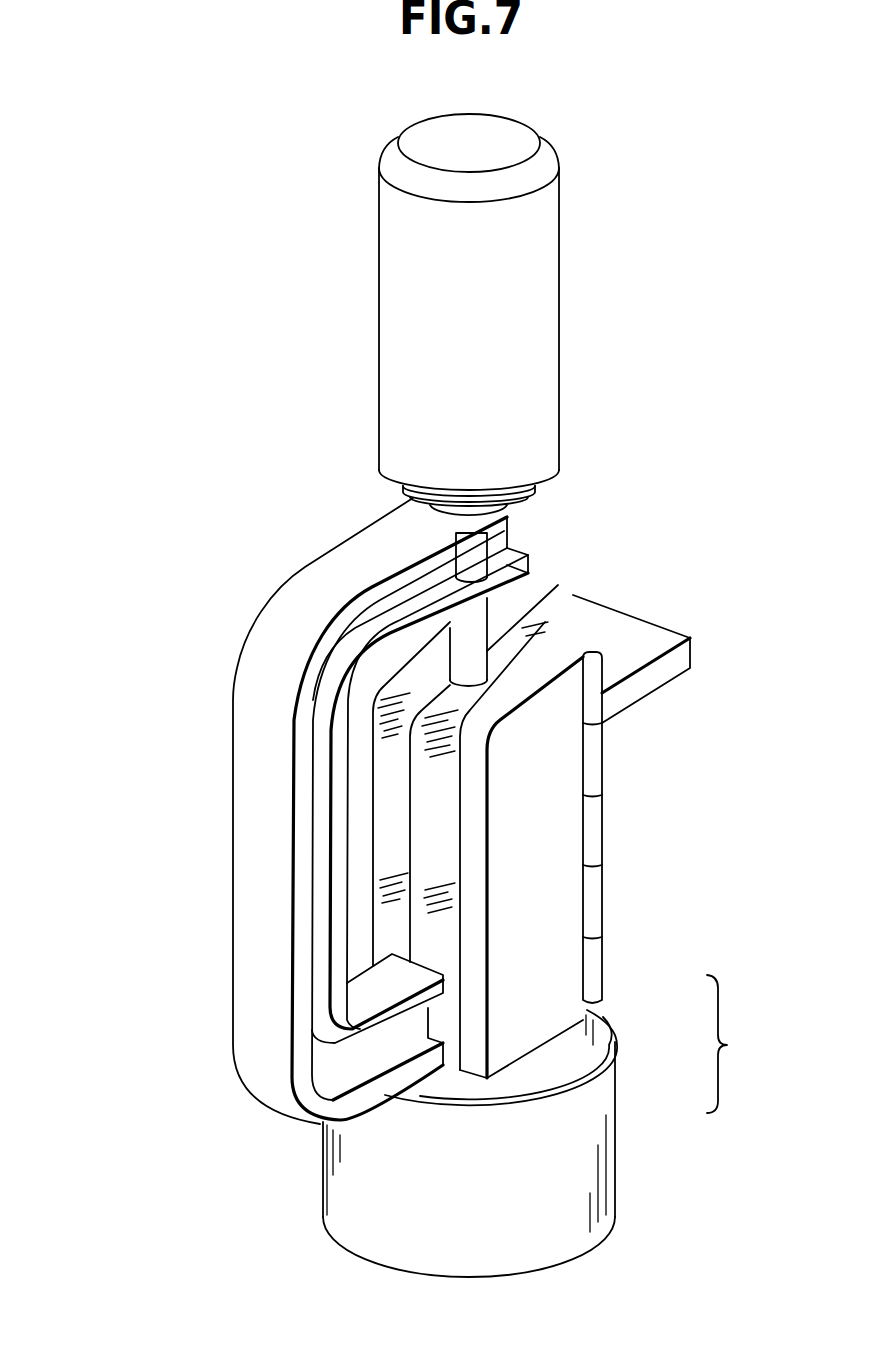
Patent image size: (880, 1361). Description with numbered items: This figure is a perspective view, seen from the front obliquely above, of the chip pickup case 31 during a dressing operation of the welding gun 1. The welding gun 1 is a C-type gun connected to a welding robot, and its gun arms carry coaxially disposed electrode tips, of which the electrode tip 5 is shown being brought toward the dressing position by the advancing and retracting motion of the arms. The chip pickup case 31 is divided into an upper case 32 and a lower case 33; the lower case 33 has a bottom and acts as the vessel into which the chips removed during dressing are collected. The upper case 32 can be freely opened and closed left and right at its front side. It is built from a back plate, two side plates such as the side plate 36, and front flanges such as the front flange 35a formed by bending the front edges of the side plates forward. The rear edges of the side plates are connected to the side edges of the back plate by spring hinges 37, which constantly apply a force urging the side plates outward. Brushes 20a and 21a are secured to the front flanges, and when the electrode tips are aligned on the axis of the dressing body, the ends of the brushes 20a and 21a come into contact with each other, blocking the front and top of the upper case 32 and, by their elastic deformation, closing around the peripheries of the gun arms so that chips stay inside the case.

The welding gun 1 is at (340, 354).
The electrode tip 5 is at (470, 628).
The brush 20a is at (385, 775).
The brush 21a is at (434, 800).
The chip pickup case 31 is at (736, 1044).
The upper case 32 is at (604, 972).
The lower case 33 is at (617, 1088).
The front flange 35a is at (357, 868).
The side plate 36 is at (545, 866).
The spring hinge 37 is at (597, 760).